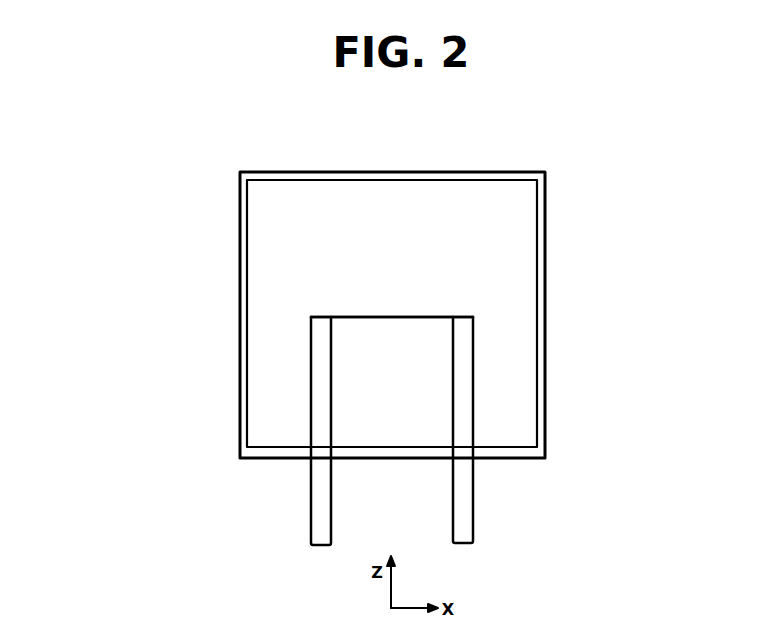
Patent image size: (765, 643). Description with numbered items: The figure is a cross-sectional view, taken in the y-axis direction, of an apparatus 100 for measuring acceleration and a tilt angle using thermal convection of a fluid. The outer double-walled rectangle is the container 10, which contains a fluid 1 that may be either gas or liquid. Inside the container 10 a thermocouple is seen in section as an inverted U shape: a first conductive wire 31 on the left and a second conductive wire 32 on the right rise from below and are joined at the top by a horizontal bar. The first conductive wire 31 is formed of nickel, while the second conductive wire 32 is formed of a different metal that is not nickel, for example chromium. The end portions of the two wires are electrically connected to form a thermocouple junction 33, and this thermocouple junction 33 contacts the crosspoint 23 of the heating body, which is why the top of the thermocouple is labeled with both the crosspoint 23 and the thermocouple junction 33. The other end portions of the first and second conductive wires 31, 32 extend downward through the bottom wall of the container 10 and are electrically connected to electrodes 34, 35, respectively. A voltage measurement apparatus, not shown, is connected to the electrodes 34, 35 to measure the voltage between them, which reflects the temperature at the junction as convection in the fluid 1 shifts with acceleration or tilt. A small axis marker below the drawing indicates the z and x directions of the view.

The apparatus 100 is at (178, 167).
The fluid 1 is at (393, 193).
The container 10 is at (545, 228).
The crosspoint 23 is at (393, 317).
The thermocouple junction 33 is at (393, 317).
The first conductive wire 31 is at (358, 318).
The second conductive wire 32 is at (423, 318).
The electrode 34 is at (311, 513).
The electrode 35 is at (473, 528).